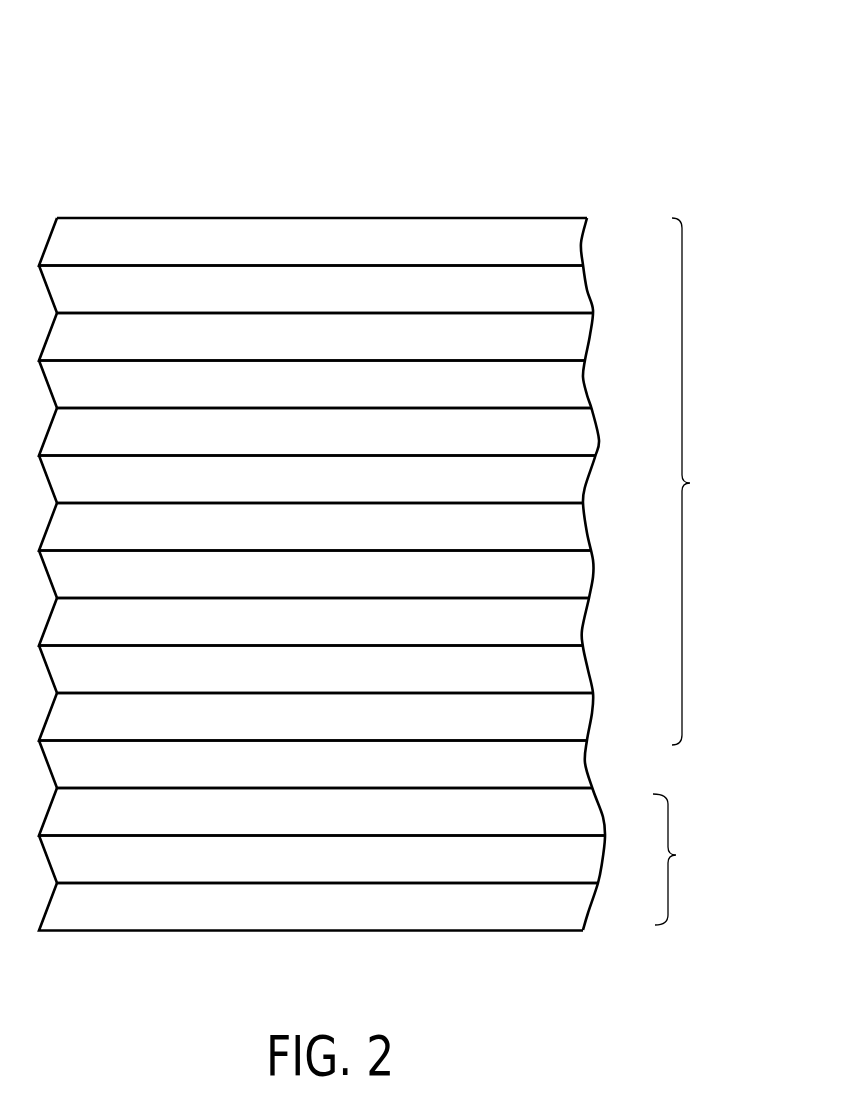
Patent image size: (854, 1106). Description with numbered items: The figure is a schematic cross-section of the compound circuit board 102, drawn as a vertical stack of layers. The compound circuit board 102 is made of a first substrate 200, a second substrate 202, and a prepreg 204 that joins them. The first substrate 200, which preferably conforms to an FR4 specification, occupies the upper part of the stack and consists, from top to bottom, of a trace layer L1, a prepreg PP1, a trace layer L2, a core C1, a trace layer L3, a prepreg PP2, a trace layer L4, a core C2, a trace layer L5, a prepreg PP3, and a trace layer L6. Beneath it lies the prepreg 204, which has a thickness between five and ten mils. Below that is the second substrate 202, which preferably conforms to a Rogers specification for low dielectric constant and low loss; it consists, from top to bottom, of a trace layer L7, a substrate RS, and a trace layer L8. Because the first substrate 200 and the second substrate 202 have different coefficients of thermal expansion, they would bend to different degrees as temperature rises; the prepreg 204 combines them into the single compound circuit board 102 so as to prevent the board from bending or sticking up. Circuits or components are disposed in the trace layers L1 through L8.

The compound circuit board 102 is at (622, 65).
The first substrate 200 is at (708, 481).
The second substrate 202 is at (691, 859).
The prepreg 204 is at (577, 772).
The trace layer L1 is at (577, 246).
The trace layer L2 is at (577, 341).
The trace layer L3 is at (577, 436).
The trace layer L4 is at (577, 532).
The trace layer L5 is at (577, 627).
The trace layer L6 is at (577, 723).
The trace layer L7 is at (577, 818).
The trace layer L8 is at (577, 913).
The prepreg PP1 is at (577, 294).
The prepreg PP2 is at (577, 484).
The prepreg PP3 is at (577, 675).
The core C1 is at (577, 389).
The core C2 is at (577, 580).
The substrate RS is at (577, 866).